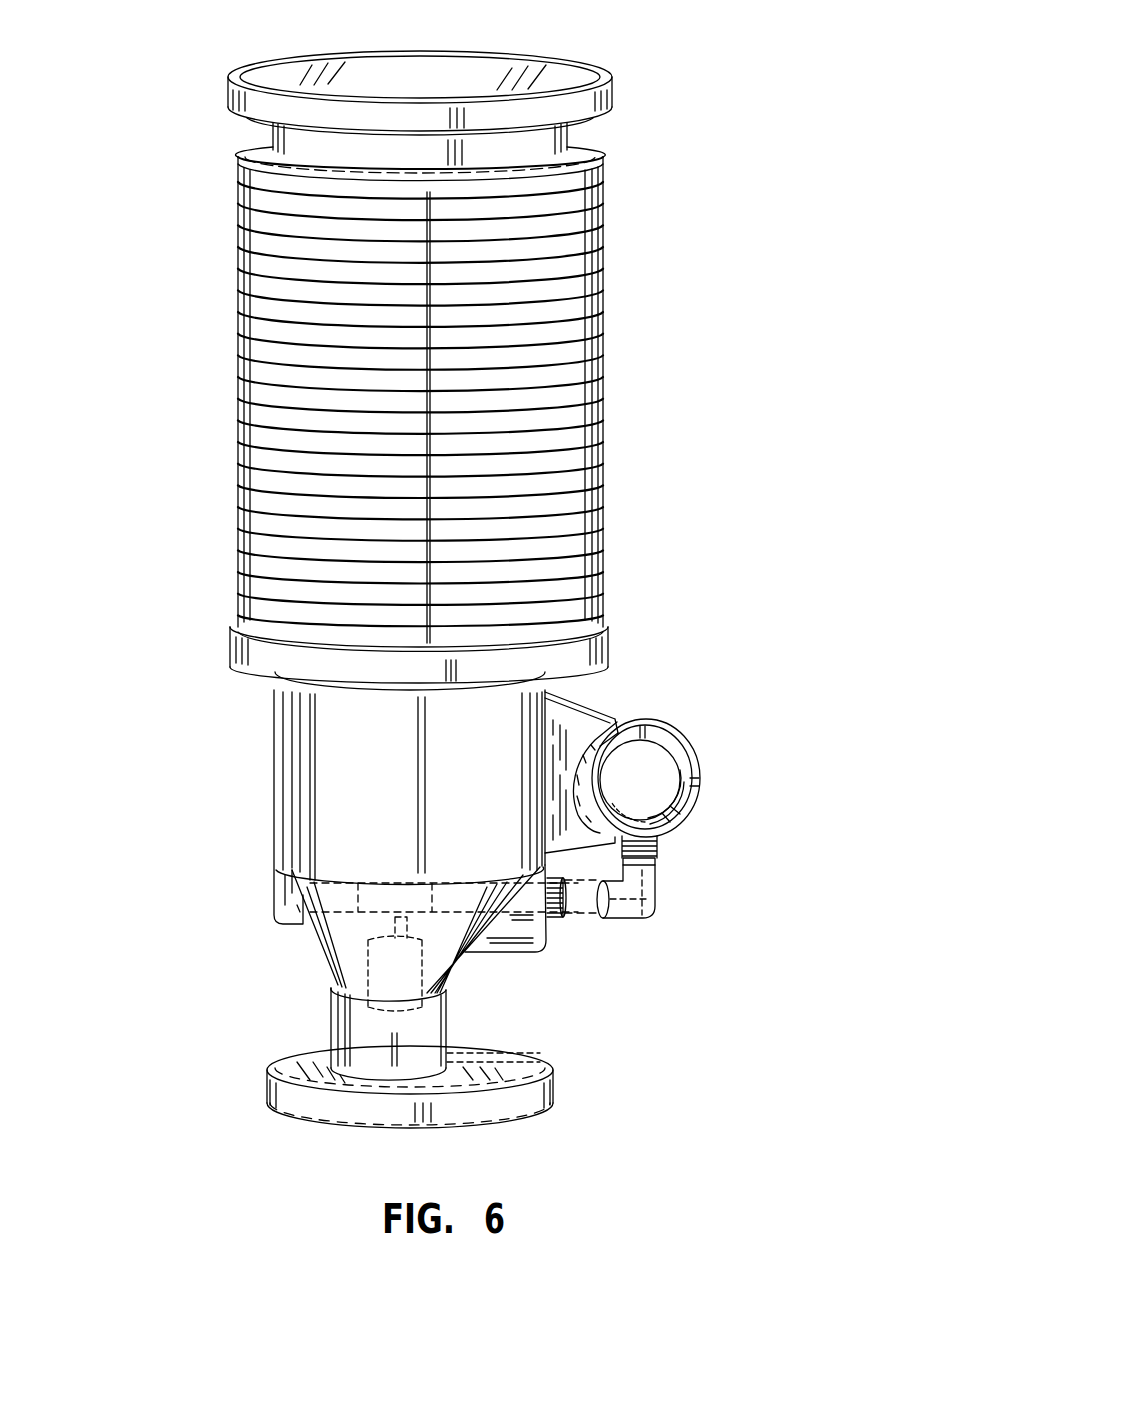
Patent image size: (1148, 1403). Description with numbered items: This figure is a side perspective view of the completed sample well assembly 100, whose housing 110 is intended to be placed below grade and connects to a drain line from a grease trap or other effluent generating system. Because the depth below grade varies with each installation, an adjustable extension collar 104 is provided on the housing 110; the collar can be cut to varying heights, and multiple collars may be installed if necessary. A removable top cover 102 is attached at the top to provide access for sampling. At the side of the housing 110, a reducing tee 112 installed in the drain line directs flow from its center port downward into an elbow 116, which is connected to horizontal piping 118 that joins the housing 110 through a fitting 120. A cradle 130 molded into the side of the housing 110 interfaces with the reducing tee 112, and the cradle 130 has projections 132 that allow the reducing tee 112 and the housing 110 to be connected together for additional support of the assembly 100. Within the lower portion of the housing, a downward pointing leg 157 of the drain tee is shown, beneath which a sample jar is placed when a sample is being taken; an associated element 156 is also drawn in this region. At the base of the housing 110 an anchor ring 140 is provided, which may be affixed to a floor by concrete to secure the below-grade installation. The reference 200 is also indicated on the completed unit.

The sample well assembly 100 is at (780, 713).
The filter cartridge 200 is at (757, 48).
The removable top cover 102 is at (412, 62).
The adjustable extension collar 104 is at (603, 300).
The housing 110 is at (277, 790).
The reducing tee 112 is at (698, 765).
The elbow 116 is at (653, 892).
The horizontal piping 118 is at (585, 916).
The fitting 120 is at (557, 918).
The cradle 130 is at (580, 727).
The projections 132 is at (615, 722).
The anchor ring 140 is at (533, 1075).
The drain tube 156 is at (393, 917).
The downward pointing leg 157 is at (393, 942).